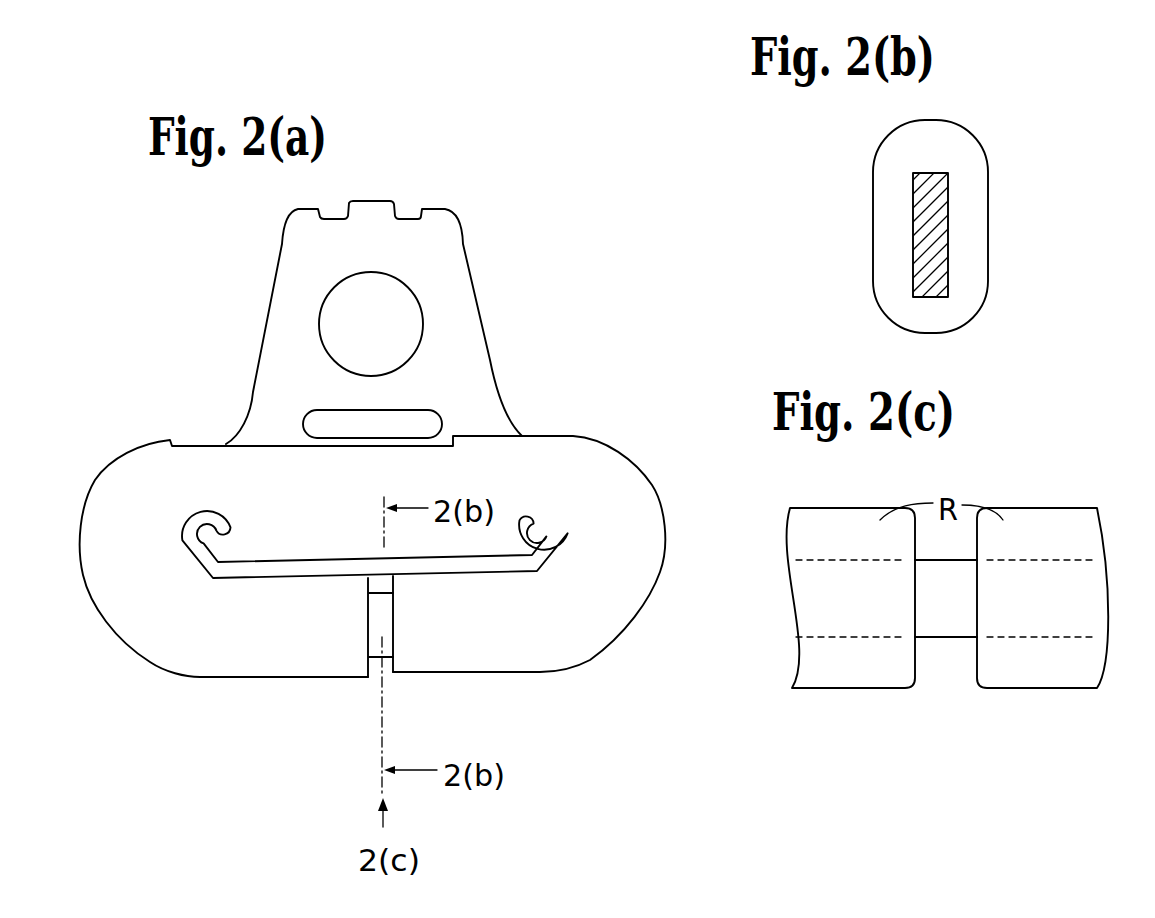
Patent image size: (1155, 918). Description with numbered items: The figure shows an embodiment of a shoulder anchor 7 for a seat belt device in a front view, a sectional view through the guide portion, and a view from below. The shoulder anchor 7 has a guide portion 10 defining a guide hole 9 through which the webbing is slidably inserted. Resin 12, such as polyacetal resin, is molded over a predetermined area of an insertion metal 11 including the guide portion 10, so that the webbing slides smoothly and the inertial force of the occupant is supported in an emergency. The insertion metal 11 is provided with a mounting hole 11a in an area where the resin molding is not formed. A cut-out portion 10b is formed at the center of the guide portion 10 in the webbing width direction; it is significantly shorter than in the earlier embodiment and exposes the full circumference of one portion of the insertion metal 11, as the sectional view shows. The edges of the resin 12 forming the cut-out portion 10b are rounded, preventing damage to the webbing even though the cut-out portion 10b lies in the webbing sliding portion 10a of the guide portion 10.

In FIG. 2A, the shoulder anchor 7 is at (218, 282).
In FIG. 2A, the guide hole 9 is at (283, 576).
In FIG. 2A, the guide portion 10 is at (328, 618).
In FIG. 2B, the guide portion 10 is at (1066, 177).
In FIG. 2A, the webbing sliding portion 10a is at (427, 580).
In FIG. 2B, the webbing sliding portion 10a is at (928, 138).
In FIG. 2A, the cut-out portion 10b is at (382, 660).
In FIG. 2C, the cut-out portion 10b is at (973, 662).
In FIG. 2A, the insertion metal 11 is at (478, 380).
In FIG. 2B, the insertion metal 11 is at (940, 233).
In FIG. 2C, the insertion metal 11 is at (942, 640).
In FIG. 2A, the mounting hole 11a is at (397, 333).
In FIG. 2A, the resin 12 is at (628, 494).
In FIG. 2B, the resin 12 is at (965, 185).
In FIG. 2C, the resin 12 is at (1013, 532).